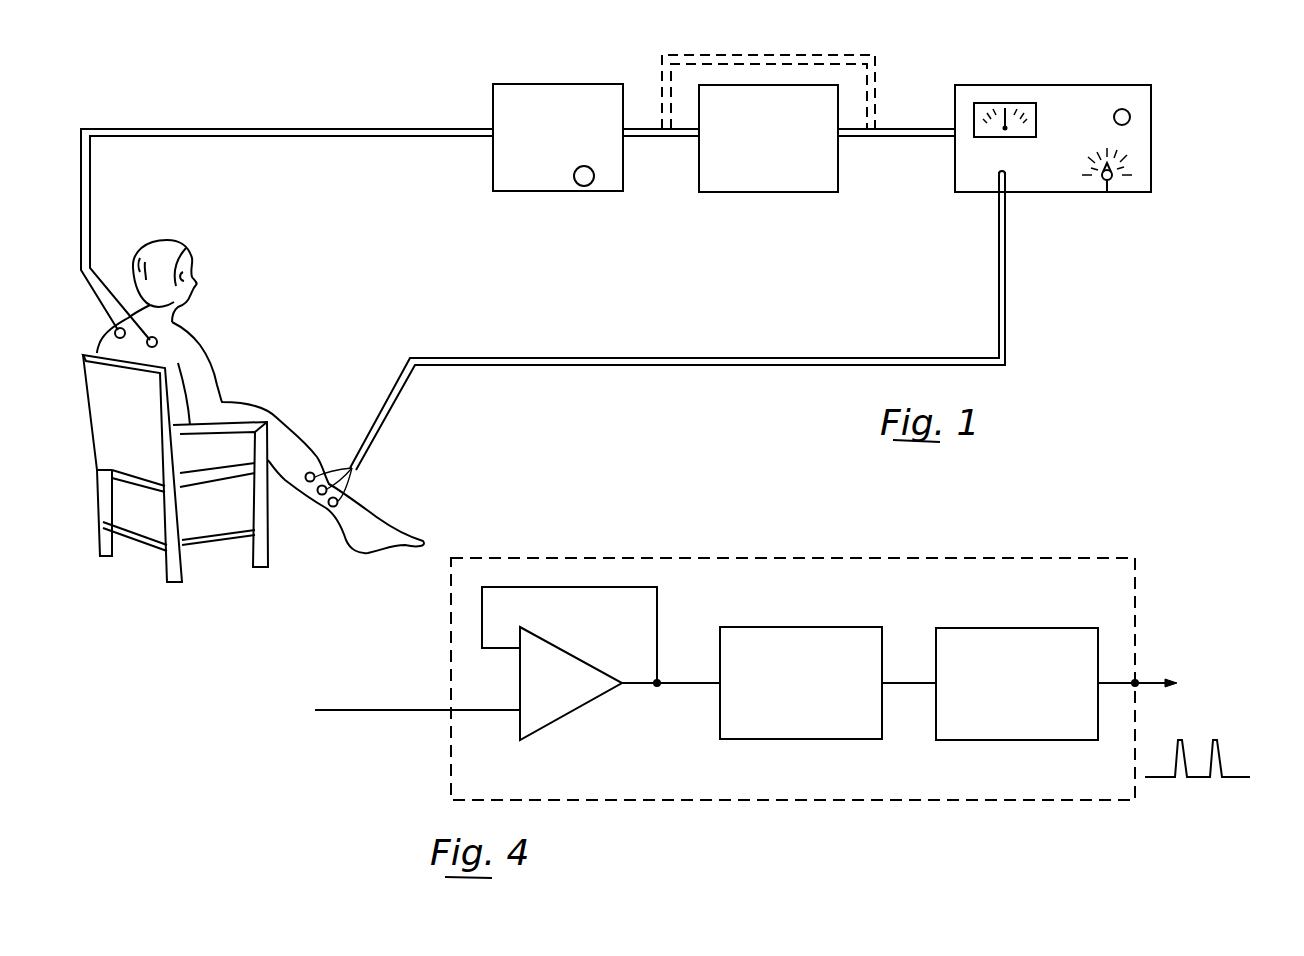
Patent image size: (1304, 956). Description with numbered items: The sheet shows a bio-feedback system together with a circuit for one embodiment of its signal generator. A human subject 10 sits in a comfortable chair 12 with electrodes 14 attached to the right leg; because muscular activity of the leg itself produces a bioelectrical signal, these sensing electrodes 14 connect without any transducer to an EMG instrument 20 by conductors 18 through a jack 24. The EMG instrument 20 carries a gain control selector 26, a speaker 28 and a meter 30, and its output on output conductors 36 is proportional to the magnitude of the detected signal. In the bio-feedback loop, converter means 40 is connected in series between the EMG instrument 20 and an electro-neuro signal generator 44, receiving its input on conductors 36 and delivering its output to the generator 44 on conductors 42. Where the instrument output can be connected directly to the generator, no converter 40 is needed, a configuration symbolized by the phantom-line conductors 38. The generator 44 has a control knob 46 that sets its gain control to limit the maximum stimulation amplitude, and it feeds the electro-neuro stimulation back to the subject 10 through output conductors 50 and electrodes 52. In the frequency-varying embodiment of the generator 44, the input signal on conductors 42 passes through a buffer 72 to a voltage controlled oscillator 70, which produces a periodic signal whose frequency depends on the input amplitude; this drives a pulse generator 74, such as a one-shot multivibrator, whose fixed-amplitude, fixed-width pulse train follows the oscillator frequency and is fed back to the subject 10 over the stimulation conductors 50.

In FIG. 1, the human subject 10 is at (188, 239).
In FIG. 1, the chair 12 is at (95, 450).
In FIG. 1, the electrodes 14 is at (318, 506).
In FIG. 1, the conductors 18 is at (607, 366).
In FIG. 1, the EMG instrument 20 is at (1113, 85).
In FIG. 1, the jack 24 is at (1006, 176).
In FIG. 1, the gain control selector 26 is at (1107, 192).
In FIG. 1, the speaker 28 is at (1130, 116).
In FIG. 1, the meter 30 is at (1012, 103).
In FIG. 1, the output conductors 36 is at (921, 128).
In FIG. 1, the conductors 38 is at (798, 55).
In FIG. 1, the converter means 40 is at (780, 192).
In FIG. 1, the conductors 42 is at (662, 137).
In FIG. 4, the conductors 42 is at (392, 712).
In FIG. 1, the electro-neuro signal generator 44 is at (560, 84).
In FIG. 4, the electro-neuro signal generator 44 is at (1007, 557).
In FIG. 1, the control knob 46 is at (576, 184).
In FIG. 1, the output conductors 50 is at (381, 128).
In FIG. 4, the output conductors 50 is at (1140, 680).
In FIG. 1, the electrodes 52 is at (115, 333).
In FIG. 4, the voltage controlled oscillator 70 is at (812, 627).
In FIG. 4, the buffer 72 is at (560, 652).
In FIG. 4, the pulse generator 74 is at (1028, 628).